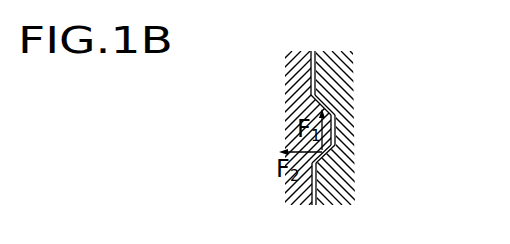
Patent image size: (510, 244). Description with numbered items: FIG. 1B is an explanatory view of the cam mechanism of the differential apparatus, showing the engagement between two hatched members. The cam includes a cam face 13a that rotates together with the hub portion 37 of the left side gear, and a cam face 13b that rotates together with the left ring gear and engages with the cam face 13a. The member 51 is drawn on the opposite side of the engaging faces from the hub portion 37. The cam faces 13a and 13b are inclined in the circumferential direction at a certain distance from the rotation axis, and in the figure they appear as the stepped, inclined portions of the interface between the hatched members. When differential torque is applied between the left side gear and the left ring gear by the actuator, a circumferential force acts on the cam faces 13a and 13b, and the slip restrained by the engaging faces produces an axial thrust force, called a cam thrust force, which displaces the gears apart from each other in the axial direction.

The first member 51 is at (300, 82).
The hub portion 37 is at (333, 78).
The cam face 13a is at (337, 148).
The cam face 13b is at (335, 162).